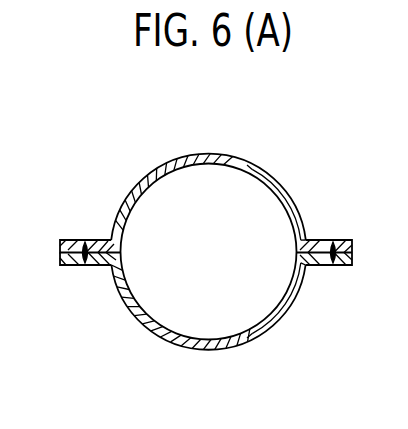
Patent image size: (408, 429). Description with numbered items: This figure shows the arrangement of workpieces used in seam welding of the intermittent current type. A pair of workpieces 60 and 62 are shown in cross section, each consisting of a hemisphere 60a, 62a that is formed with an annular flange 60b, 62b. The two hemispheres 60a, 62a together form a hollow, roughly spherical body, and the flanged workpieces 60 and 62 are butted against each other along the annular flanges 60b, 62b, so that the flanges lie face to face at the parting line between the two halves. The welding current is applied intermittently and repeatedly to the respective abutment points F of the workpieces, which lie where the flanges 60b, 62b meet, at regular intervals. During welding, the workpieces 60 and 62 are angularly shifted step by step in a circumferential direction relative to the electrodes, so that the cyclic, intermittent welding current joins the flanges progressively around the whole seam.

The workpiece 60 is at (151, 160).
The workpiece 62 is at (171, 346).
The hemisphere 60a is at (248, 160).
The hemisphere 62a is at (275, 318).
The annular flange 60b is at (73, 240).
The annular flange 62b is at (70, 266).
The abutment point F is at (333, 242).